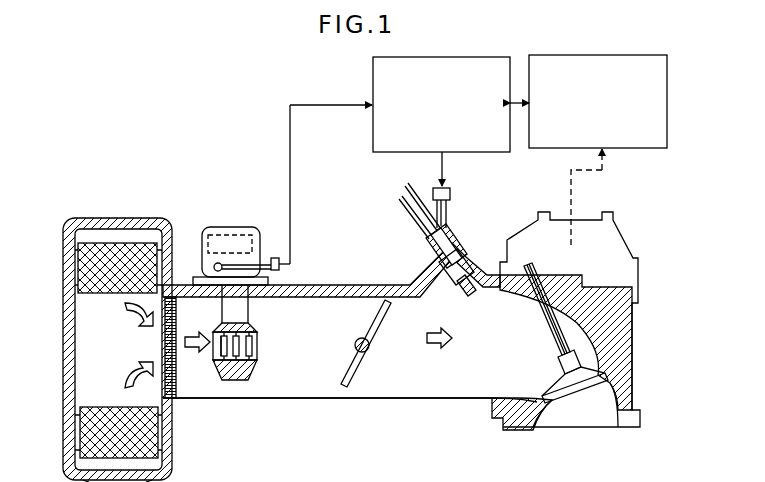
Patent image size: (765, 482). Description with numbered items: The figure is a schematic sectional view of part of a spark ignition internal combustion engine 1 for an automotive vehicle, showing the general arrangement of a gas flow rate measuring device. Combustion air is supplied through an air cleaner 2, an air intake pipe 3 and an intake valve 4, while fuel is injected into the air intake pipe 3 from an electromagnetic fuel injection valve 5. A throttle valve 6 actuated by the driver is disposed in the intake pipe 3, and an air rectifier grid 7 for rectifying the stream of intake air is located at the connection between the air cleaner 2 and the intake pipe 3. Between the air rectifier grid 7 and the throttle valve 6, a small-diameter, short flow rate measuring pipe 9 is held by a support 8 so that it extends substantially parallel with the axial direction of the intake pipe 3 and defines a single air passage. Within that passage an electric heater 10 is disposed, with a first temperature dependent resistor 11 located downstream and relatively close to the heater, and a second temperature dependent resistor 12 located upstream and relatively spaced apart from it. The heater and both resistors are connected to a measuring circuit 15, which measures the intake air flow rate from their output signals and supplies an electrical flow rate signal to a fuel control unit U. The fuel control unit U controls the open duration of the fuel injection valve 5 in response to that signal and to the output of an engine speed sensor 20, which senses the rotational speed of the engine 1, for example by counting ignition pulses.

The internal combustion engine 1 is at (636, 378).
The air cleaner 2 is at (74, 417).
The air intake pipe 3 is at (378, 405).
The intake valve 4 is at (570, 395).
The electromagnetic fuel injection valve 5 is at (470, 250).
The throttle valve 6 is at (370, 330).
The air rectifier grid 7 is at (178, 330).
The support 8 is at (248, 305).
The flow rate measuring pipe 9 is at (258, 325).
The electric heater 10 is at (252, 364).
The first temperature dependent resistor 11 is at (252, 346).
The second temperature dependent resistor 12 is at (221, 350).
The measuring circuit 15 is at (242, 235).
The engine speed sensor 20 is at (627, 148).
The fuel control unit U is at (473, 152).